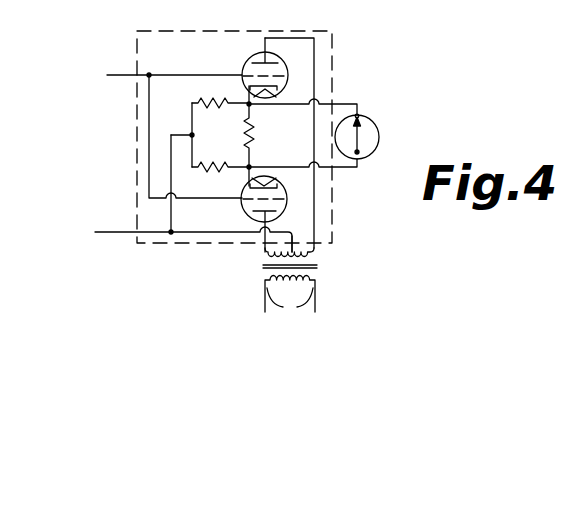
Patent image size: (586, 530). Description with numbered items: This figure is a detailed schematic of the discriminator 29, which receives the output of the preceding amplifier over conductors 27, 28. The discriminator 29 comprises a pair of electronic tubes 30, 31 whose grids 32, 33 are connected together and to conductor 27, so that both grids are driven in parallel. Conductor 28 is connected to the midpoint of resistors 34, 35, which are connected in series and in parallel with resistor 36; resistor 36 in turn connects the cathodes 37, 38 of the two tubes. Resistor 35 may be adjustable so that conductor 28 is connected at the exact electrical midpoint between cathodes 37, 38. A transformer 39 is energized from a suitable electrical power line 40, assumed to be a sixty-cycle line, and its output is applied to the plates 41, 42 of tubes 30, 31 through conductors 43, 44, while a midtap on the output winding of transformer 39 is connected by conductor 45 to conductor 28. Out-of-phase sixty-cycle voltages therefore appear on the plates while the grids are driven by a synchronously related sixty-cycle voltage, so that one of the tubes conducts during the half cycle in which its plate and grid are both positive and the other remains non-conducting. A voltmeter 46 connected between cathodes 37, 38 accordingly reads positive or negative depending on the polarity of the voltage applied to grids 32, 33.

The conductor 27 is at (120, 77).
The conductor 28 is at (118, 231).
The discriminator 29 is at (120, 164).
The electronic tube 30 is at (284, 62).
The electronic tube 31 is at (287, 199).
The grid 32 is at (244, 68).
The grid 33 is at (245, 185).
The resistor 34 is at (210, 102).
The resistor 35 is at (215, 162).
The resistor 36 is at (254, 138).
The cathode 37 is at (288, 96).
The cathode 38 is at (277, 181).
The transformer 39 is at (262, 270).
The electrical power line 40 is at (290, 307).
The plate 41 is at (260, 58).
The plate 42 is at (247, 213).
The conductor 43 is at (316, 250).
The conductor 44 is at (262, 256).
The conductor 45 is at (303, 227).
The voltmeter 46 is at (378, 146).